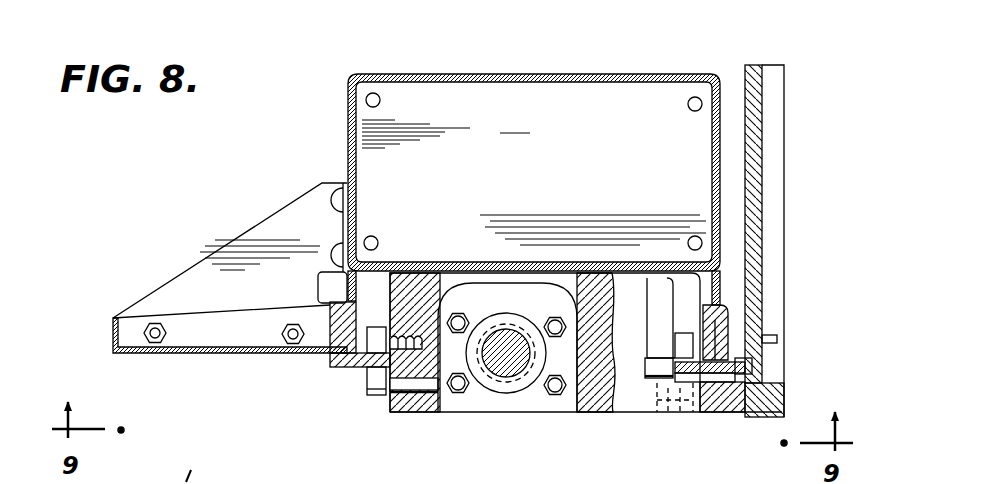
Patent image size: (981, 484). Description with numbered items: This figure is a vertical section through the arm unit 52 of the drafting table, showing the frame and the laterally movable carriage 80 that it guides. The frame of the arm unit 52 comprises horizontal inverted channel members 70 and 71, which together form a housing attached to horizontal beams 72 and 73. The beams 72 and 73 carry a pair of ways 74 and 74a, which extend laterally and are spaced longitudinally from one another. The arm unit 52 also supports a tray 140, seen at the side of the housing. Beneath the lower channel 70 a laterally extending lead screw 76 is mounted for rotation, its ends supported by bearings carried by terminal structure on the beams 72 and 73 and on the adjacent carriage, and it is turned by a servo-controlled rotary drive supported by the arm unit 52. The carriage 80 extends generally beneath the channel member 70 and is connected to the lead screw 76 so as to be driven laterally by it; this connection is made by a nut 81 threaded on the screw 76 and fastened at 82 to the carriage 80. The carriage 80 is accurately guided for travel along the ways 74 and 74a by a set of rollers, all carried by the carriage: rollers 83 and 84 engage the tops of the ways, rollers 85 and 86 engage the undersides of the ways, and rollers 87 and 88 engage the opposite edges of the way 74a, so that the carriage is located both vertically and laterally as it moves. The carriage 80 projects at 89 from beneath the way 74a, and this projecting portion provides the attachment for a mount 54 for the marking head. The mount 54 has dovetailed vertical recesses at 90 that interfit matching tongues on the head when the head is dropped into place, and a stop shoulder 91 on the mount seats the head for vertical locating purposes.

The horizontal inverted channel member 71 is at (568, 76).
The arm unit 52 is at (345, 128).
The dovetailed vertical recesses 90 is at (778, 112).
The mount 54 is at (788, 241).
The stop shoulder 91 is at (778, 341).
The tray 140 is at (184, 342).
The horizontal beam 72 is at (330, 310).
The way 74 is at (323, 360).
The roller 83 is at (382, 326).
The roller 85 is at (370, 382).
The laterally movable carriage 80 is at (401, 415).
The horizontal inverted channel member 70 is at (490, 262).
The nut 81 is at (513, 413).
The lead screw 76 is at (503, 367).
The fastening 82 is at (457, 312).
The roller 84 is at (684, 334).
The roller 87 is at (660, 381).
The roller 86 is at (683, 420).
The horizontal beam 73 is at (718, 325).
The way 74a is at (742, 362).
The roller 88 is at (748, 371).
The projecting portion of carriage 89 is at (730, 413).